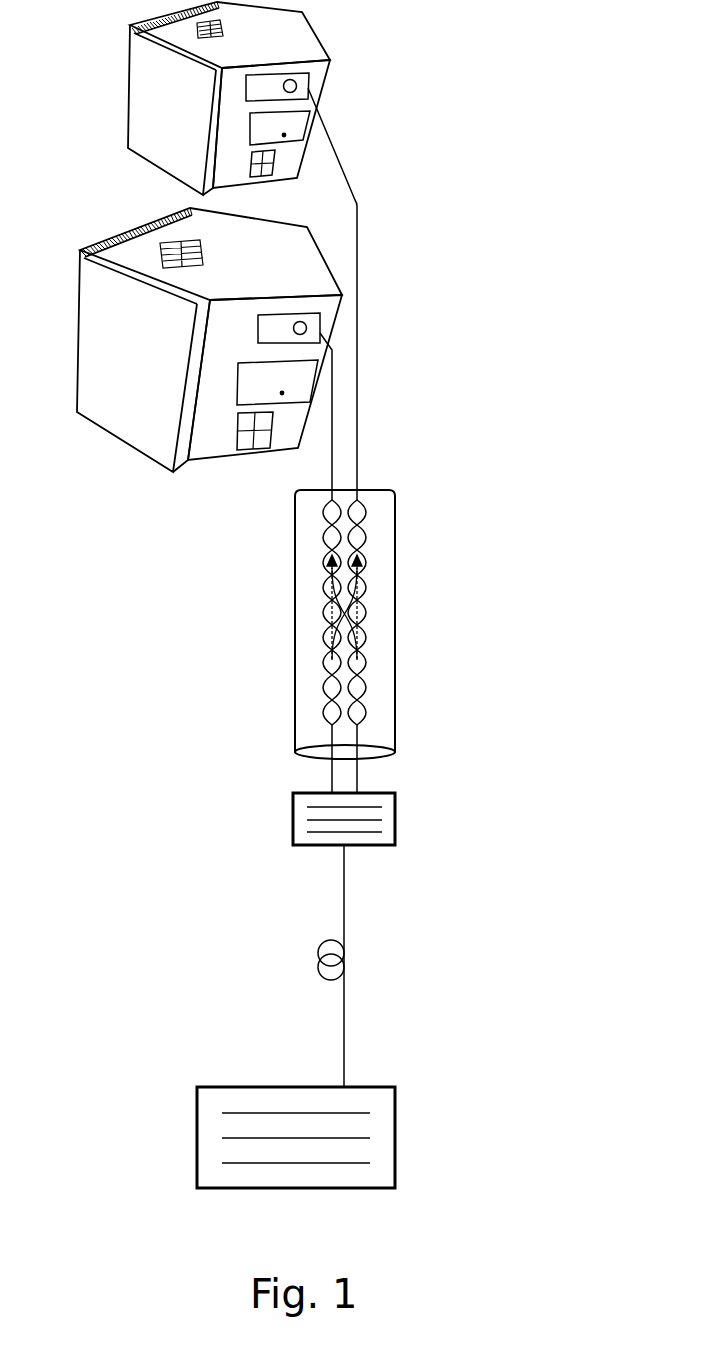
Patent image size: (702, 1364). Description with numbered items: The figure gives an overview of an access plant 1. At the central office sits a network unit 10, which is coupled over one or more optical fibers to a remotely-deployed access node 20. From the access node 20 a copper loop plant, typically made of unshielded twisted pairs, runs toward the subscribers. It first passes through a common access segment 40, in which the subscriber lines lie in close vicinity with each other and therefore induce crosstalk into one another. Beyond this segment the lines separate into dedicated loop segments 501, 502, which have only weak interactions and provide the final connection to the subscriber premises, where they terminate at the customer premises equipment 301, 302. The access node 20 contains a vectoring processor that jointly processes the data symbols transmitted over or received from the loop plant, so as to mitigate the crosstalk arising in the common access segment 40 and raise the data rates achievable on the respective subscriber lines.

The access plant 1 is at (478, 430).
The network unit 10 is at (197, 1188).
The access node 20 is at (293, 845).
The common access segment 40 is at (395, 625).
The dedicated loop segment 501 is at (332, 480).
The dedicated loop segment 502 is at (357, 426).
The customer premises equipment 301 is at (258, 330).
The customer premises equipment 302 is at (247, 87).